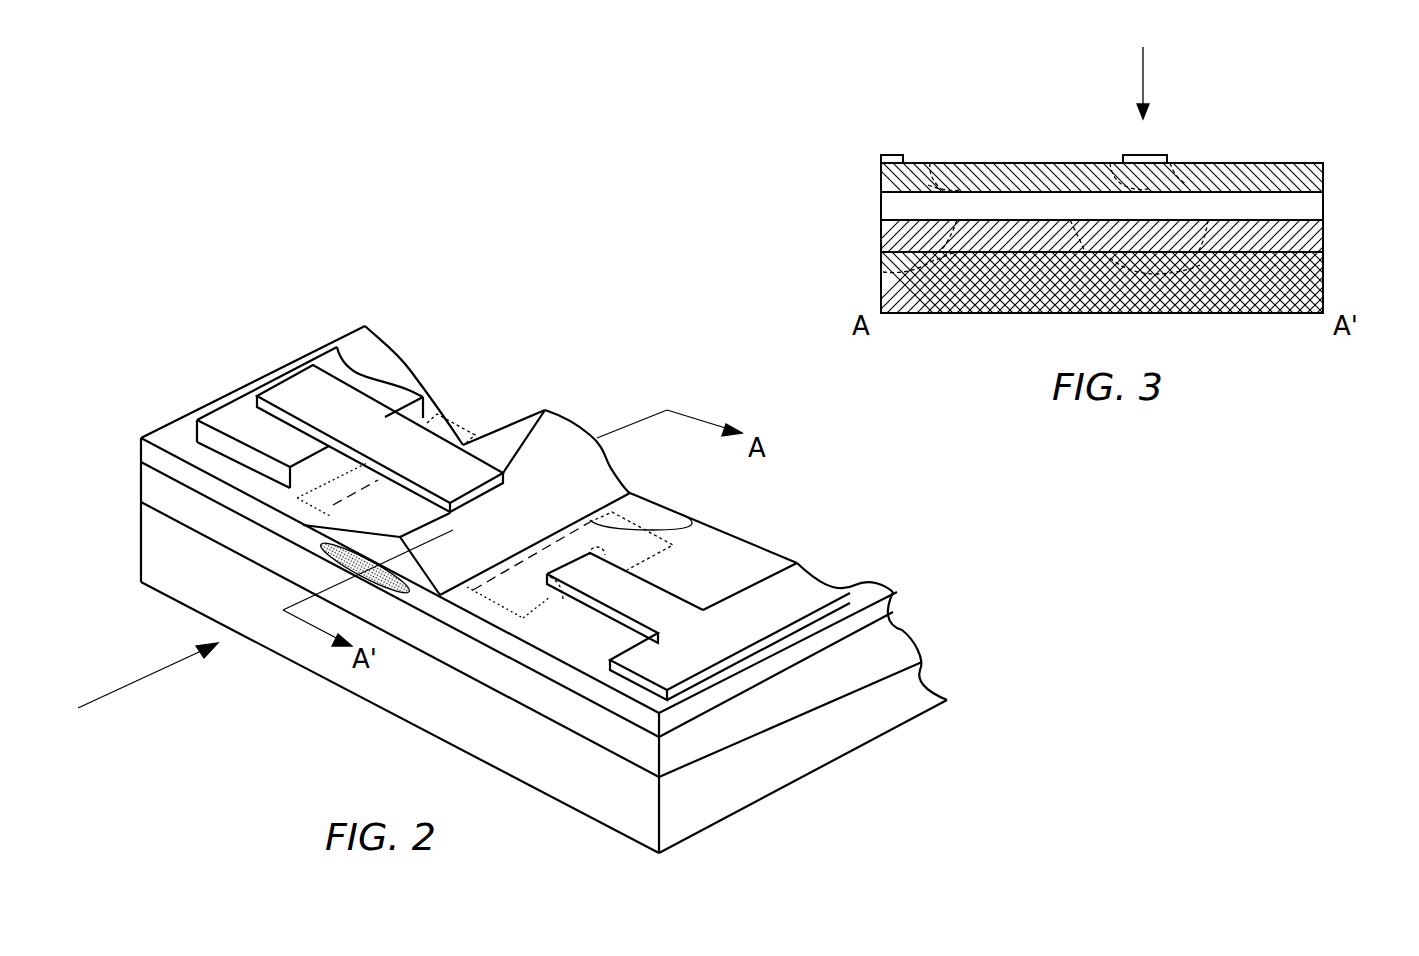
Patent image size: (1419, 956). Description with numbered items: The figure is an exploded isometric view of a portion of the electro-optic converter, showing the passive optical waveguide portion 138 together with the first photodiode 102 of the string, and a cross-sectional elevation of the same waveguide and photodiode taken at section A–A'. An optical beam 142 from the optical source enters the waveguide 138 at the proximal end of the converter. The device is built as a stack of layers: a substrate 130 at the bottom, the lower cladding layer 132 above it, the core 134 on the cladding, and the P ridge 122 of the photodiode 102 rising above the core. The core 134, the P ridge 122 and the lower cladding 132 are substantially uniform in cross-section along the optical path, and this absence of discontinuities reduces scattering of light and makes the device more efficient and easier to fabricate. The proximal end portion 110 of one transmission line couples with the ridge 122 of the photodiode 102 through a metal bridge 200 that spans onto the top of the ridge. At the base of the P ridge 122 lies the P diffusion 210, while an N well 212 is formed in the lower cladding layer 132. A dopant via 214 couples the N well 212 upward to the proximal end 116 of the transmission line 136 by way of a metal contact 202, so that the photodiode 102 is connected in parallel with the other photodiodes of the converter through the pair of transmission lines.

In FIG. 2, the photodiode 102 is at (292, 388).
In FIG. 3, the photodiode 102 is at (1140, 72).
In FIG. 2, the proximal end portion 110 is at (211, 410).
In FIG. 2, the proximal end portion 116 is at (655, 668).
In FIG. 2, the P ridge 122 is at (585, 399).
In FIG. 3, the P ridge 122 is at (1262, 163).
In FIG. 2, the substrate 130 is at (818, 754).
In FIG. 3, the substrate 130 is at (1323, 283).
In FIG. 2, the lower cladding layer 132 is at (884, 648).
In FIG. 3, the lower cladding layer 132 is at (1323, 238).
In FIG. 2, the core 134 is at (888, 620).
In FIG. 3, the core 134 is at (1323, 205).
In FIG. 2, the transmission line 136 is at (800, 582).
In FIG. 3, the transmission line 136 is at (1283, 163).
In FIG. 2, the passive optical waveguide portion 138 is at (337, 562).
In FIG. 2, the optical beam 142 is at (130, 692).
In FIG. 2, the metal bridge 200 is at (475, 482).
In FIG. 3, the metal bridge 200 is at (1130, 153).
In FIG. 2, the metal contact 202 is at (592, 578).
In FIG. 2, the P diffusion 210 is at (600, 528).
In FIG. 3, the P diffusion 210 is at (1180, 167).
In FIG. 2, the N well 212 is at (439, 420).
In FIG. 3, the N well 212 is at (1155, 280).
In FIG. 2, the dopant via 214 is at (555, 597).